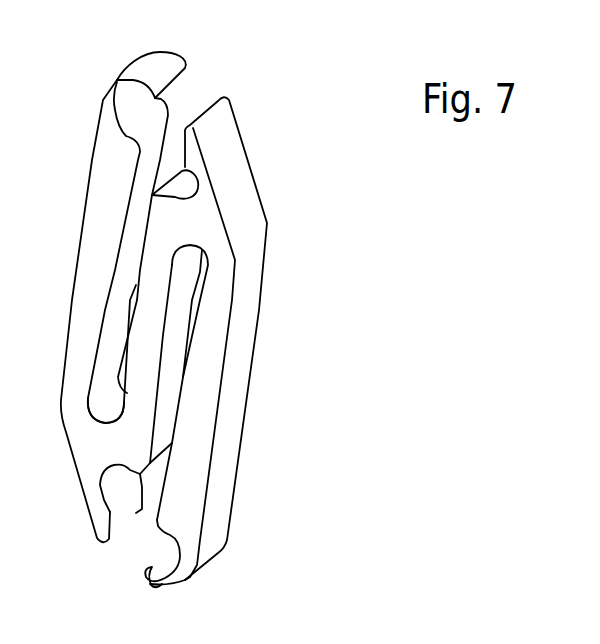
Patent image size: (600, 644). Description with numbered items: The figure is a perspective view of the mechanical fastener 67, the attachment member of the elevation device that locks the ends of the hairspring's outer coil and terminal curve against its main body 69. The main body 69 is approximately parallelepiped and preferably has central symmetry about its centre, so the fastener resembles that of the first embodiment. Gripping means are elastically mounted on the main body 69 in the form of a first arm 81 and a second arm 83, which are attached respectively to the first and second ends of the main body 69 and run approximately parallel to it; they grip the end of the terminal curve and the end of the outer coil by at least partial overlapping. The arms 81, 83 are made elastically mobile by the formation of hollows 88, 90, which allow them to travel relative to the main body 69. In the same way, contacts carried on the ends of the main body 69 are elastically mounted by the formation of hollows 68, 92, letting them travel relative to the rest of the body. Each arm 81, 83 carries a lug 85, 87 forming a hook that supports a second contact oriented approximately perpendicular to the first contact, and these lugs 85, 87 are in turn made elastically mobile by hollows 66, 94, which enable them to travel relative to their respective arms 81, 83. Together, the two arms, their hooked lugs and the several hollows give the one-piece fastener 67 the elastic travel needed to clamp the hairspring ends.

The hollow 66 is at (183, 95).
The mechanical fastener 67 is at (368, 222).
The hollow 68 is at (183, 186).
The main body 69 is at (150, 327).
The first arm 81 is at (83, 236).
The second arm 83 is at (238, 407).
The lug 85 is at (143, 74).
The lug 87 is at (153, 584).
The hollow 88 is at (107, 410).
The hollow 90 is at (190, 252).
The hollow 92 is at (118, 485).
The hollow 94 is at (173, 547).